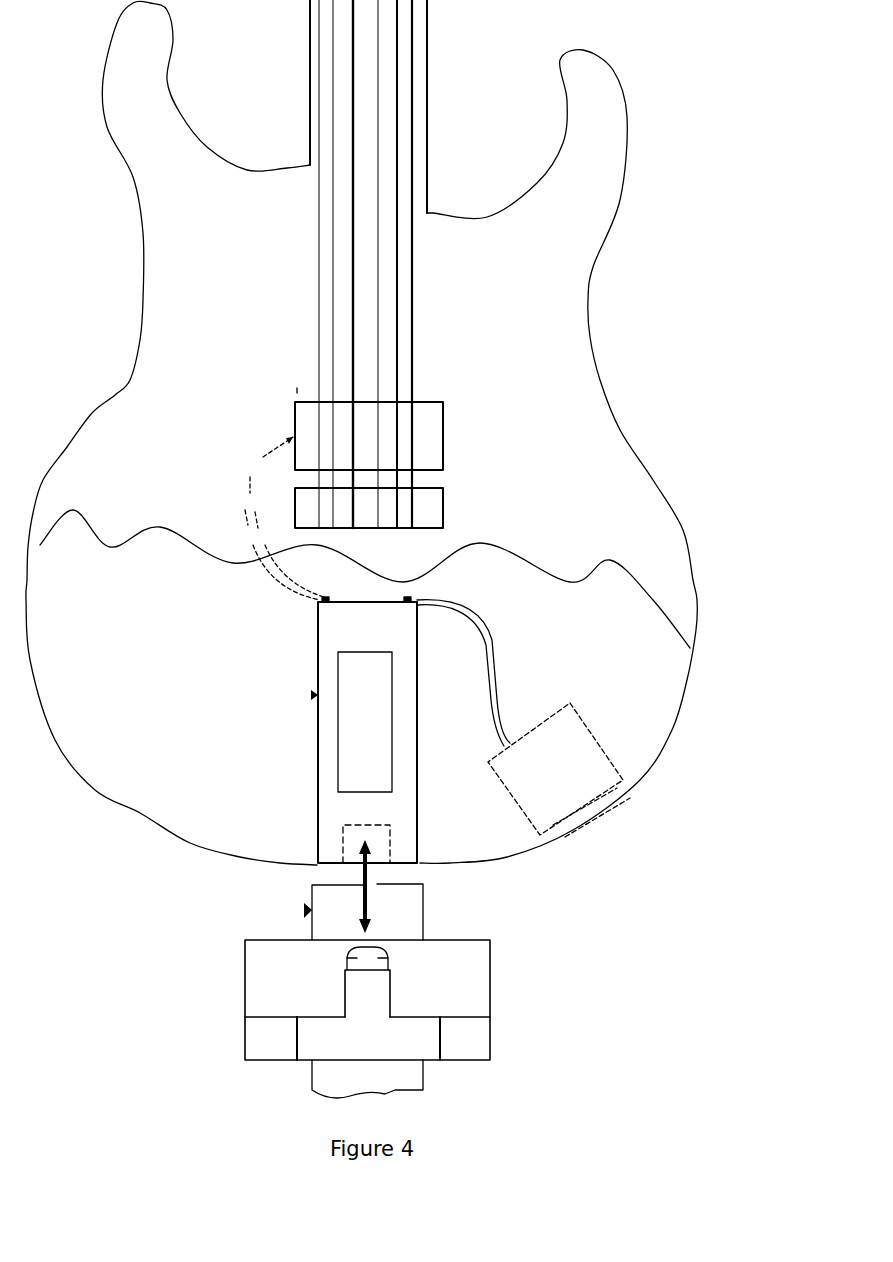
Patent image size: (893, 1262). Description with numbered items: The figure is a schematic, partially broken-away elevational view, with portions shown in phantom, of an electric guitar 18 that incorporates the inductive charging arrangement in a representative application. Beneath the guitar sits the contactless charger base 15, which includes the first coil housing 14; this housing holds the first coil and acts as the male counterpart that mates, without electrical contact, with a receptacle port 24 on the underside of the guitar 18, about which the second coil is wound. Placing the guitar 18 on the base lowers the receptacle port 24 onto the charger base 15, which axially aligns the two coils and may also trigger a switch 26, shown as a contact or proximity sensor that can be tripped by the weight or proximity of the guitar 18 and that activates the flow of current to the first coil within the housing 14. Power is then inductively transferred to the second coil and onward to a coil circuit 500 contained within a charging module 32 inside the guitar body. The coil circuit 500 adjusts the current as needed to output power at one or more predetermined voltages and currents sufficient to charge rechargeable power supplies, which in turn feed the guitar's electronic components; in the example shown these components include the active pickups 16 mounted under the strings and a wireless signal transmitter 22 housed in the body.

The first coil housing 14 is at (370, 994).
The charger base 15 is at (504, 945).
The active pickups 16 is at (303, 423).
The electric guitar 18 is at (550, 473).
The wireless signal transmitter 22 is at (582, 762).
The receptacle port 24 is at (353, 842).
The switch 26 is at (350, 962).
The charging module 32 is at (322, 737).
The coil circuit 500 is at (373, 685).